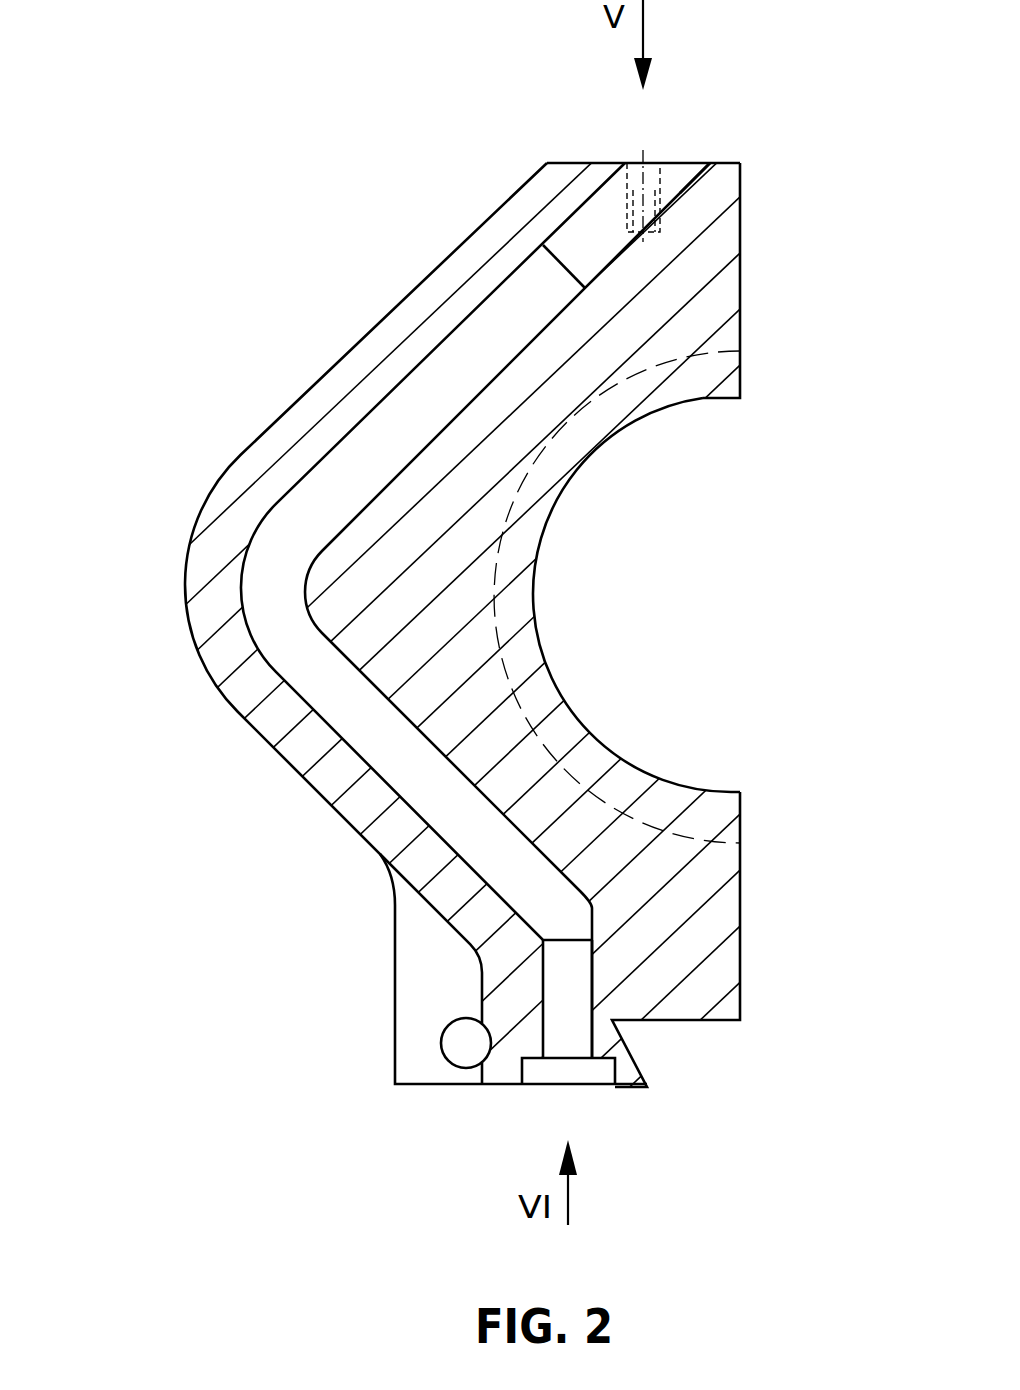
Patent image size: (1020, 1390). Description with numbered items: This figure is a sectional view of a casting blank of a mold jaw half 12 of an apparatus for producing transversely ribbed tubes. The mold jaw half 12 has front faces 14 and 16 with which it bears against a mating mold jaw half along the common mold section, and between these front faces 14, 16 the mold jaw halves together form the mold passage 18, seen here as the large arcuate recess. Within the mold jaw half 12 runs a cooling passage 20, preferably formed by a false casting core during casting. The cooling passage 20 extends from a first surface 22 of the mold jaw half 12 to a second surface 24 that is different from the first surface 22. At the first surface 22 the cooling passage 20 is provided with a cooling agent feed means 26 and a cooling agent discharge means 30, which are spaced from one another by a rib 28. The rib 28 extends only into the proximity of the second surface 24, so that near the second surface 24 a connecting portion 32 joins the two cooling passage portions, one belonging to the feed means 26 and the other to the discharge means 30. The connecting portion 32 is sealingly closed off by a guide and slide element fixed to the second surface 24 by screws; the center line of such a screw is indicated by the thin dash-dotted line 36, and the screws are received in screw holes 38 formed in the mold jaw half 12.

The mold jaw half 12 is at (510, 695).
The front face 14 is at (741, 290).
The front face 16 is at (741, 930).
The mold passage 18 is at (662, 677).
The cooling passage 20 is at (288, 530).
The first surface 22 is at (490, 1090).
The second surface 24 is at (586, 162).
The cooling agent feed means 26 is at (577, 1047).
The rib 28 is at (330, 690).
The cooling agent discharge means 30 is at (625, 1129).
The connecting portion 32 is at (585, 233).
The center line 36 is at (708, 163).
The screw hole 38 is at (664, 154).